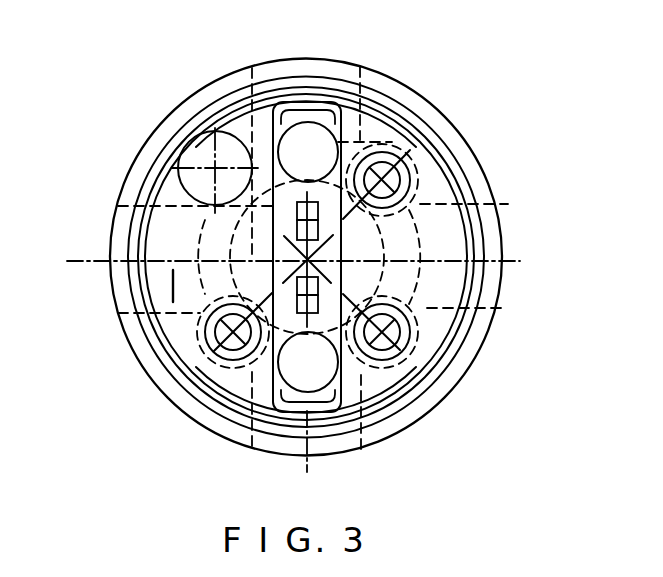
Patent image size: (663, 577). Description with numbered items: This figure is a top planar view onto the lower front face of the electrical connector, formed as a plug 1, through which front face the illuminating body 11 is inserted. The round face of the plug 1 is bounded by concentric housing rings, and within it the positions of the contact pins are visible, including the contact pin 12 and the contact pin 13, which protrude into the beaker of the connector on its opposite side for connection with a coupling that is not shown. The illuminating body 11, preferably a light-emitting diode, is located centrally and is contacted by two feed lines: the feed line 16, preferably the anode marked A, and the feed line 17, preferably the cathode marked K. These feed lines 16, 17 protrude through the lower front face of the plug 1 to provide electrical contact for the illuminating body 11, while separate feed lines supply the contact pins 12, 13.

The plug 1 is at (184, 118).
The illuminating body 11 is at (247, 248).
The contact pin 12 is at (400, 350).
The contact pin 13 is at (233, 332).
The feed line 16 is at (326, 131).
The feed line 17 is at (316, 392).